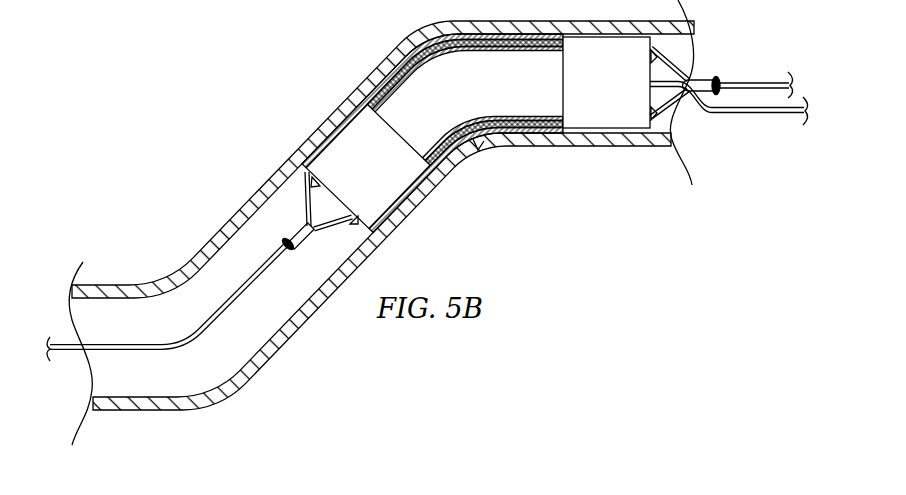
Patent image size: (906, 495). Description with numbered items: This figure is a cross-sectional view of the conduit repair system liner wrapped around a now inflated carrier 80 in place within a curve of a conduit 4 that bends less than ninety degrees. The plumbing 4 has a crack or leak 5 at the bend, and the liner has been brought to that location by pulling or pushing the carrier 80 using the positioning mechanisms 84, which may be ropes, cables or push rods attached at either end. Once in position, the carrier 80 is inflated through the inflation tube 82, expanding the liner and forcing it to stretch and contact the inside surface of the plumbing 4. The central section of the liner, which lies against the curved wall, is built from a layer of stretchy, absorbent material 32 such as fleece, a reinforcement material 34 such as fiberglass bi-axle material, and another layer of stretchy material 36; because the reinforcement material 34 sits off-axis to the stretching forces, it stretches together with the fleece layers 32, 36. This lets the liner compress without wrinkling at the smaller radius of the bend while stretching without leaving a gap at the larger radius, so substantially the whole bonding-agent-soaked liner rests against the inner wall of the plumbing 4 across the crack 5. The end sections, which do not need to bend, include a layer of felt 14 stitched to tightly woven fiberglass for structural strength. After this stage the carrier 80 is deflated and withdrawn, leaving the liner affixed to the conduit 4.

The conduit 4 is at (598, 147).
The crack or leak 5 is at (485, 161).
The layer of felt 14 is at (334, 150).
The layer of stretchy, absorbent material 32 is at (414, 33).
The reinforcement material 34 is at (396, 92).
The layer of stretchy material 36 is at (452, 56).
The carrier 80 is at (303, 203).
The inflation tube 82 is at (742, 116).
The positioning mechanisms 84 is at (160, 352).